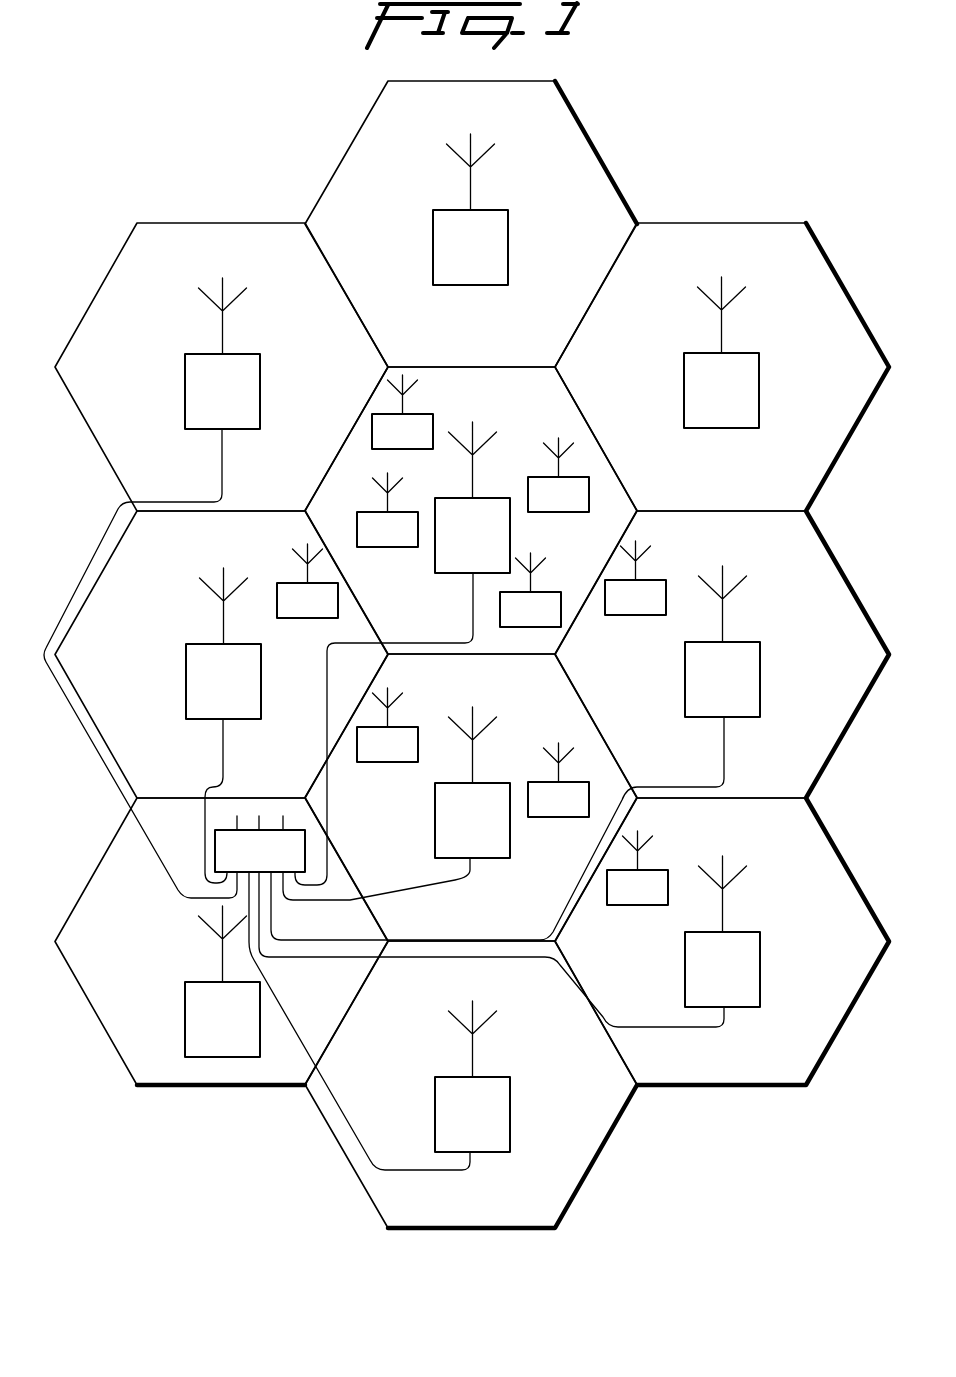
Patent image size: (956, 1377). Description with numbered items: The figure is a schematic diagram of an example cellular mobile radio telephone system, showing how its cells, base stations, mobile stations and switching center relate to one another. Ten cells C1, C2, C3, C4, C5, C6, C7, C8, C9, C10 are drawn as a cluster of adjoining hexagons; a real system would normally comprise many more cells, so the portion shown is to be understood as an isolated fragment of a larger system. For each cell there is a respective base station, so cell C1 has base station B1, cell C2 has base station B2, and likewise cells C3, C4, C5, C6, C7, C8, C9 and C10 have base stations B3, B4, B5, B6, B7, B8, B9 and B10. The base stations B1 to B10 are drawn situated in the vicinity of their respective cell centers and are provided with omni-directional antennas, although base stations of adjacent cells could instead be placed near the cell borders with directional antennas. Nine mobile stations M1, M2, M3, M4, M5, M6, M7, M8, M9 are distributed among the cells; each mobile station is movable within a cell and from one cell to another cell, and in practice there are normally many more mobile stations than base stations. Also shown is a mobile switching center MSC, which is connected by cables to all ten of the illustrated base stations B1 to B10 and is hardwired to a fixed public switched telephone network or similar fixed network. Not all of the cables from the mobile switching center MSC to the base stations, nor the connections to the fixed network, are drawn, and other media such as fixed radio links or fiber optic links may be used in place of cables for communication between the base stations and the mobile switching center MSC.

The cell C1 is at (412, 631).
The cell C2 is at (658, 491).
The cell C3 is at (661, 778).
The cell C4 is at (410, 924).
The cell C5 is at (161, 778).
The cell C6 is at (159, 494).
The cell C7 is at (410, 349).
The cell C8 is at (661, 1068).
The cell C9 is at (412, 1209).
The cell C10 is at (168, 1066).
The base station B1 is at (402, 653).
The base station B2 is at (721, 352).
The base station B3 is at (515, 753).
The base station B4 is at (396, 803).
The base station B5 is at (223, 725).
The base station B6 is at (152, 588).
The base station B7 is at (470, 209).
The base station B8 is at (509, 941).
The base station B9 is at (379, 1021).
The base station B10 is at (222, 981).
The mobile station M1 is at (637, 868).
The mobile station M2 is at (307, 581).
The mobile station M3 is at (387, 510).
The mobile station M4 is at (558, 475).
The mobile station M5 is at (635, 578).
The mobile station M6 is at (402, 412).
The mobile station M7 is at (530, 590).
The mobile station M8 is at (558, 780).
The mobile station M9 is at (387, 725).
The mobile switching center MSC is at (260, 844).